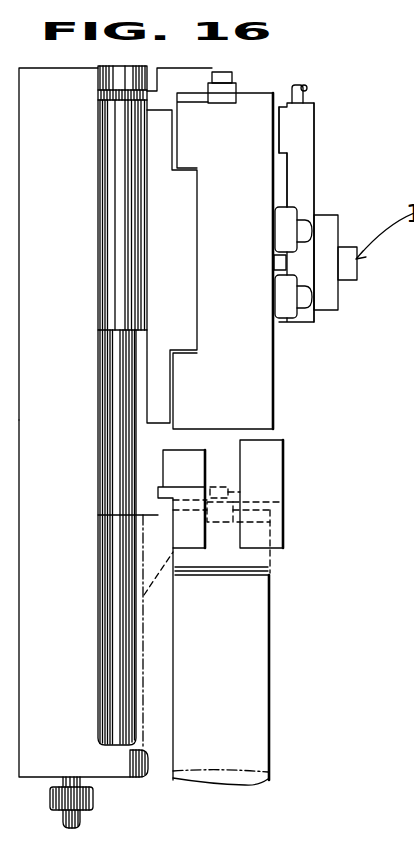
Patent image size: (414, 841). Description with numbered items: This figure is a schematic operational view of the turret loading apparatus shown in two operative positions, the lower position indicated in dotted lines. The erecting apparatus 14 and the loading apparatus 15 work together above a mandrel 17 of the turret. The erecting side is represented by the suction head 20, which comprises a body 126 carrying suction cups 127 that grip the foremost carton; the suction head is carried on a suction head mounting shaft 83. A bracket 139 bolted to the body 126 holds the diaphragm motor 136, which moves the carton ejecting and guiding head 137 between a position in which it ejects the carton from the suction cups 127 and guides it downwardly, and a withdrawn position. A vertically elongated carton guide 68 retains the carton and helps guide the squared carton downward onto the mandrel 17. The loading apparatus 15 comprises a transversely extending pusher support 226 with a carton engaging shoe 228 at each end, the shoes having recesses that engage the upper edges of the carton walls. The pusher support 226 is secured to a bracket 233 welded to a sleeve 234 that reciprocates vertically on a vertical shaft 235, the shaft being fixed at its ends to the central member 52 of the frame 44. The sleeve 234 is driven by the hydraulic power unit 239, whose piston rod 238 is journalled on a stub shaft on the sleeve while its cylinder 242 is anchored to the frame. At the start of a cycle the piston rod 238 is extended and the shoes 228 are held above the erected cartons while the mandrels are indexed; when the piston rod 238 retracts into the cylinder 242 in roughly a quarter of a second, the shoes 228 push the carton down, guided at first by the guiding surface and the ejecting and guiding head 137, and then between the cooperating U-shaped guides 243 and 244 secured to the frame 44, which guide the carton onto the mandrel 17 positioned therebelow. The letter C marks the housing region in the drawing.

The erecting apparatus 14 is at (323, 135).
The loading apparatus 15 is at (255, 83).
The mandrel 17 is at (232, 659).
The suction head 20 is at (315, 164).
The frame 44 is at (70, 448).
The central member 52 is at (70, 324).
The carton guide 68 is at (184, 263).
The suction head mounting shaft 83 is at (306, 88).
The body 126 is at (287, 184).
The suction cup 127 is at (273, 139).
The diaphragm motor 136 is at (343, 247).
The carton ejecting and guiding head 137 is at (274, 256).
The bracket 139 is at (338, 310).
The pusher support 226 is at (231, 73).
The carton engaging shoe 228 is at (246, 101).
The bracket 233 is at (180, 77).
The sleeve 234 is at (110, 240).
The vertical shaft 235 is at (103, 548).
The piston rod 238 is at (90, 772).
The hydraulic power unit 239 is at (81, 818).
The cylinder 242 is at (94, 797).
The U-shaped guide 243 is at (170, 465).
The U-shaped guide 244 is at (291, 454).
The housing C is at (242, 342).